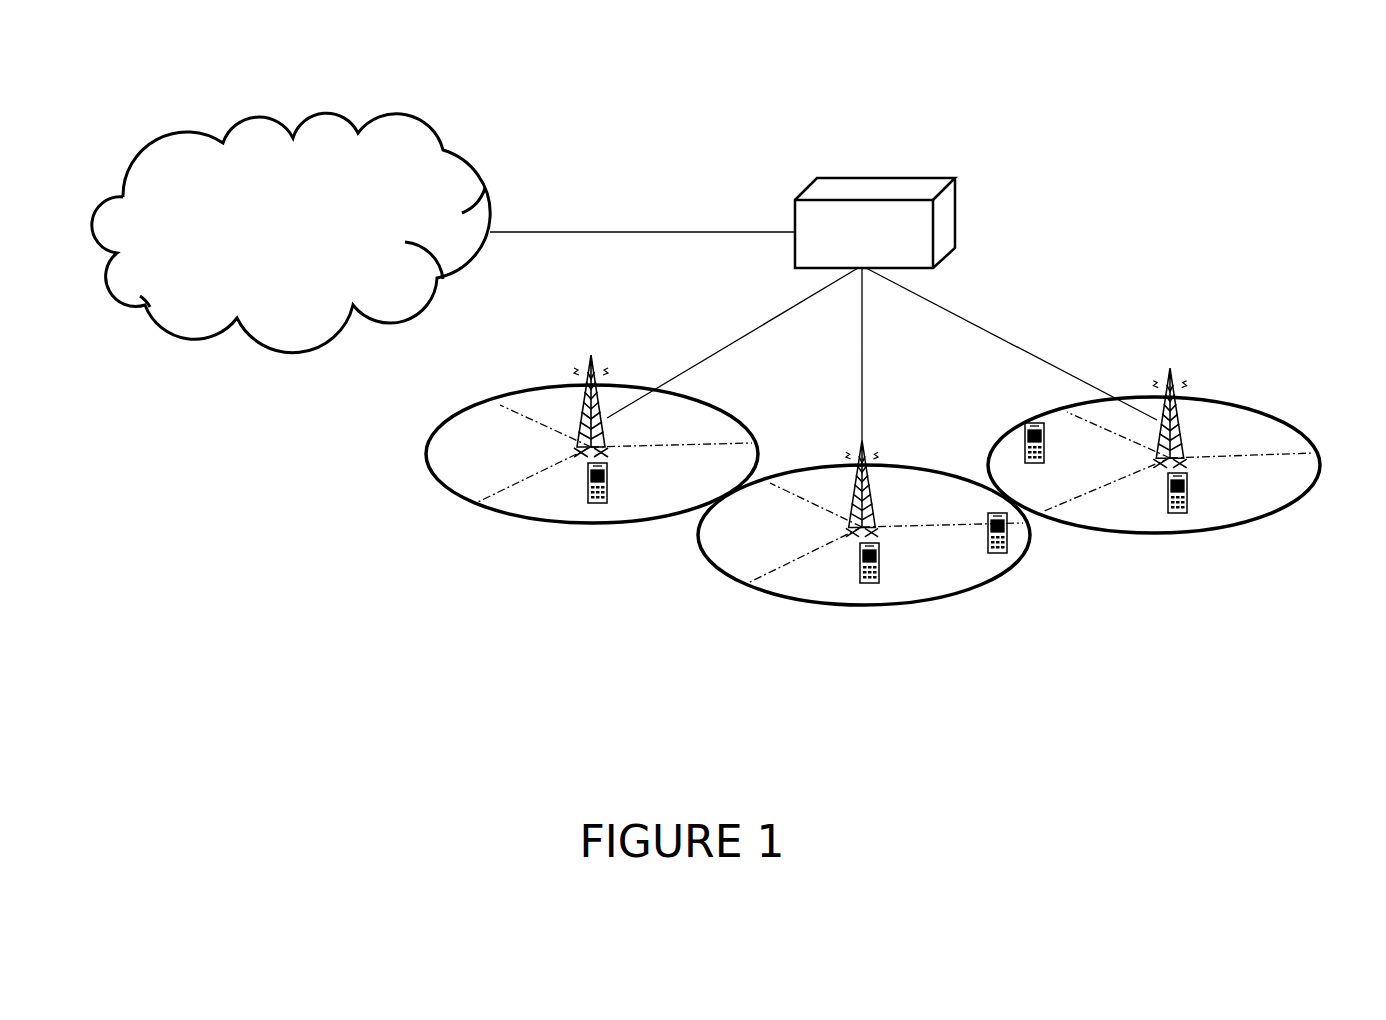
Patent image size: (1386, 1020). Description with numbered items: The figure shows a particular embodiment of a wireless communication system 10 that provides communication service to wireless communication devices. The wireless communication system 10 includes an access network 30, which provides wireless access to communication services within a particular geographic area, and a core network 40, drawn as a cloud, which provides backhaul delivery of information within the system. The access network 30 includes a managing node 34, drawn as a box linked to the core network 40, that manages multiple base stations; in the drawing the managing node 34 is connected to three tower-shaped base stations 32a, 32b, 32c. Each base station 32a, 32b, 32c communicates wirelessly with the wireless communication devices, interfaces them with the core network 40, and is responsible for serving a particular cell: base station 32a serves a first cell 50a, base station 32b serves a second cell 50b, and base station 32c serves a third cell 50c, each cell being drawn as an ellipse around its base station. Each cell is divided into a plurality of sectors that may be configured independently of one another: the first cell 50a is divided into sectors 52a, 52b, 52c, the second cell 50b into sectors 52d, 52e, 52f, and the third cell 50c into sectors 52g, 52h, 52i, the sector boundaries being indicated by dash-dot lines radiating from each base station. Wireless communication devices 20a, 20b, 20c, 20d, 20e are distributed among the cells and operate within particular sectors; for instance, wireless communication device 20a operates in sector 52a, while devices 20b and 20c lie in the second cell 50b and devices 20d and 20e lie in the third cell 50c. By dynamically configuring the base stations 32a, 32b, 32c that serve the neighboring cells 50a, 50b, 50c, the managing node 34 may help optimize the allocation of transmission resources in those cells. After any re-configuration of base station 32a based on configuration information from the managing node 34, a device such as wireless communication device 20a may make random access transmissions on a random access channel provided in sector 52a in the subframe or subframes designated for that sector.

The wireless communication system 10 is at (1152, 157).
The access network 30 is at (455, 610).
The core network 40 is at (253, 118).
The managing node 34 is at (785, 188).
The base station 32a is at (578, 368).
The base station 32b is at (870, 457).
The base station 32c is at (1142, 377).
The cell 50a is at (443, 415).
The cell 50b is at (748, 592).
The cell 50c is at (1275, 515).
The sector 52a is at (631, 492).
The sector 52b is at (468, 463).
The sector 52c is at (629, 430).
The sector 52d is at (903, 573).
The sector 52e is at (739, 545).
The sector 52f is at (901, 510).
The sector 52g is at (1193, 505).
The sector 52h is at (1048, 475).
The sector 52i is at (1193, 442).
The wireless communication device 20a is at (597, 503).
The wireless communication device 20b is at (867, 585).
The wireless communication device 20c is at (997, 557).
The wireless communication device 20d is at (1033, 463).
The wireless communication device 20e is at (1173, 515).